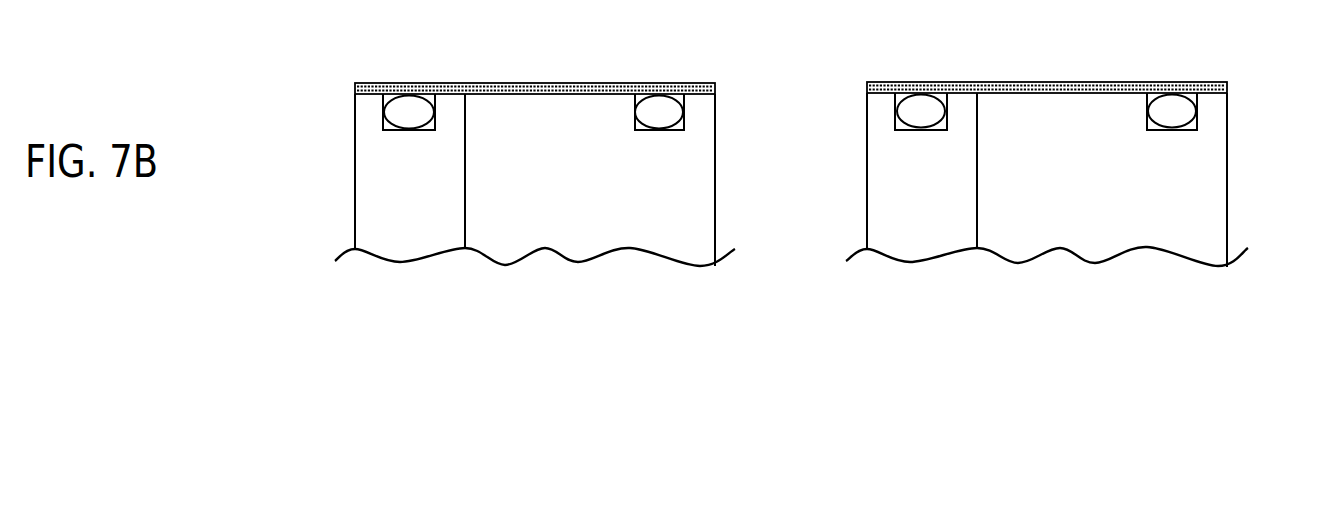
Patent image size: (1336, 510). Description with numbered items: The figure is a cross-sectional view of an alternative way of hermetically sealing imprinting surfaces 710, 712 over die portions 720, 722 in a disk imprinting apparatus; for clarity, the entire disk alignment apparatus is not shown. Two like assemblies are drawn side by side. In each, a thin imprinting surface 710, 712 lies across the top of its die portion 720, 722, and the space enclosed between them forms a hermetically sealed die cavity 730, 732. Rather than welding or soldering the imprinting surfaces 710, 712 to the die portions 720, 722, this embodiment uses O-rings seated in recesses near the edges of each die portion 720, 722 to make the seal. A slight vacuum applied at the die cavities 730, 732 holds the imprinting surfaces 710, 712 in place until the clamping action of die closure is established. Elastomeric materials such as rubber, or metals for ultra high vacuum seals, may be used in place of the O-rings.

The imprinting surface 710 is at (355, 82).
The imprinting surface 712 is at (867, 81).
The die portion 720 is at (397, 207).
The die portion 722 is at (1175, 215).
The die cavity 730 is at (540, 225).
The die cavity 732 is at (1052, 223).